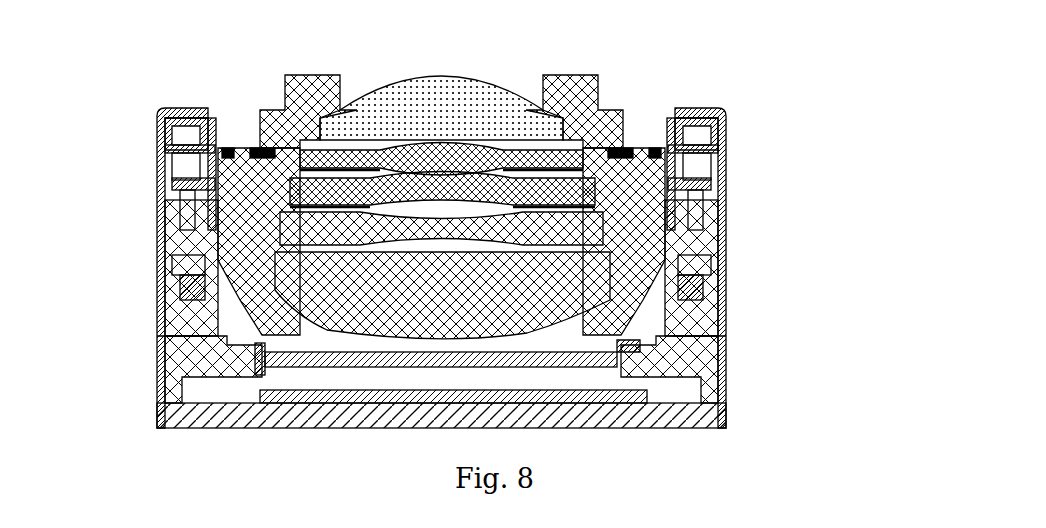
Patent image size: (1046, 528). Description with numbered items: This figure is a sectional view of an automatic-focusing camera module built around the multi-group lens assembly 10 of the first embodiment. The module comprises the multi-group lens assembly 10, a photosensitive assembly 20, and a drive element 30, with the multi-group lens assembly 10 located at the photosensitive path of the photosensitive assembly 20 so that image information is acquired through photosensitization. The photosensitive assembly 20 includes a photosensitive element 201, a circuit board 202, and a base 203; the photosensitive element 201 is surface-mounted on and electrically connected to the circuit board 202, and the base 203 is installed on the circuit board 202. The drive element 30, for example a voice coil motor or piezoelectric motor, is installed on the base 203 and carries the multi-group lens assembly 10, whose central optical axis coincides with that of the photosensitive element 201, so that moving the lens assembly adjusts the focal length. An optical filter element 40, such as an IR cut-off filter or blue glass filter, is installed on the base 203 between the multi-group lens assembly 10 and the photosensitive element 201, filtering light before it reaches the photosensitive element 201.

The multi-group lens assembly 10 is at (255, 113).
The photosensitive assembly 20 is at (733, 357).
The drive element 30 is at (725, 193).
The optical filter element 40 is at (725, 305).
The photosensitive element 201 is at (723, 380).
The circuit board 202 is at (158, 428).
The base 203 is at (157, 353).